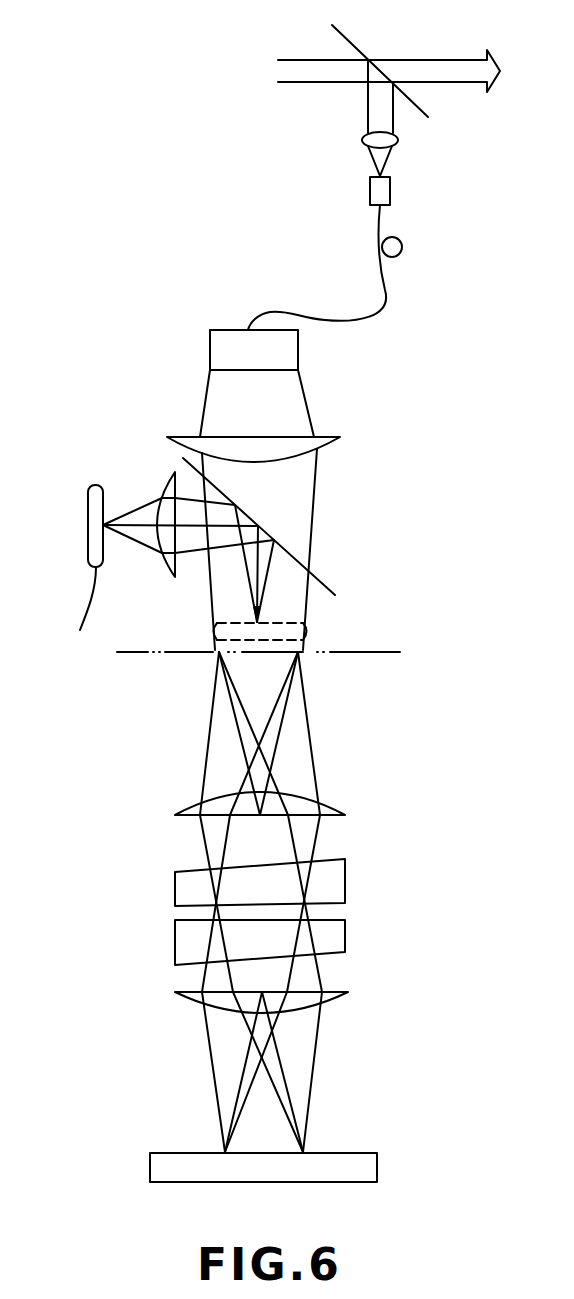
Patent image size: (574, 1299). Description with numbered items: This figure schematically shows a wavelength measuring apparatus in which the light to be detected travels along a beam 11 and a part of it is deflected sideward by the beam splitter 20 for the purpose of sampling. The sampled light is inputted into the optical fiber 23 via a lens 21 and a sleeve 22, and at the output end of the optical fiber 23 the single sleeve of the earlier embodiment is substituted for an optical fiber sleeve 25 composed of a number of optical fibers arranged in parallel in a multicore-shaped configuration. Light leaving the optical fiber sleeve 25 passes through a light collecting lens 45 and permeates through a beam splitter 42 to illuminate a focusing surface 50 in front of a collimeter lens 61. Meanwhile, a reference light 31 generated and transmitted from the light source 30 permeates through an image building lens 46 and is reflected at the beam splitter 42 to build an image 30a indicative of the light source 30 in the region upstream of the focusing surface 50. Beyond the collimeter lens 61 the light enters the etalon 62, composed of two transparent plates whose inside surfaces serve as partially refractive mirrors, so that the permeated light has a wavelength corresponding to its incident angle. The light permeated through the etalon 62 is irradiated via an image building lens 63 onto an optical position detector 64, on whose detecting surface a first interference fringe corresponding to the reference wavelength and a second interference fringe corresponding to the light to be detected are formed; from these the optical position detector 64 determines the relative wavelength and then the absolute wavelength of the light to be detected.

The exposure light beam 11 is at (303, 58).
The beam splitter 20 is at (356, 46).
The lens 21 is at (398, 140).
The sleeve 22 is at (390, 195).
The optical fiber 23 is at (385, 290).
The optical fiber sleeve 25 is at (298, 350).
The light collecting lens 45 is at (320, 437).
The reference light 31 is at (126, 510).
The light source 30 is at (88, 503).
The image building lens 46 is at (163, 565).
The beam splitter 42 is at (320, 577).
The image of the light source 30a is at (303, 625).
The focusing surface 50 is at (367, 652).
The collimeter lens 61 is at (338, 808).
The etalon 62 is at (347, 847).
The image building lens 63 is at (338, 997).
The optical position detector 64 is at (345, 1153).